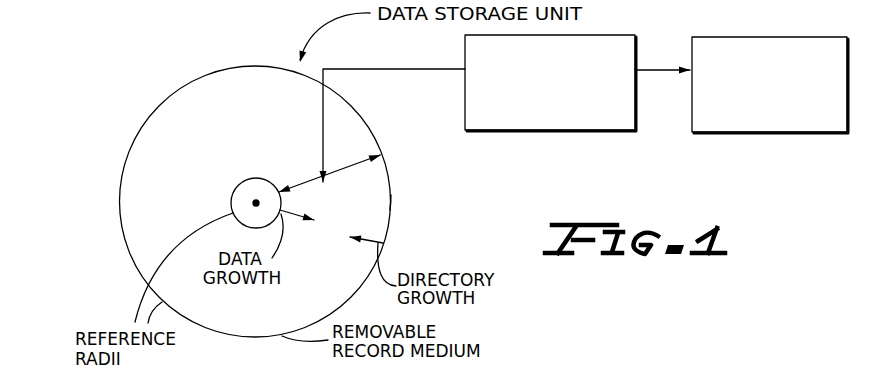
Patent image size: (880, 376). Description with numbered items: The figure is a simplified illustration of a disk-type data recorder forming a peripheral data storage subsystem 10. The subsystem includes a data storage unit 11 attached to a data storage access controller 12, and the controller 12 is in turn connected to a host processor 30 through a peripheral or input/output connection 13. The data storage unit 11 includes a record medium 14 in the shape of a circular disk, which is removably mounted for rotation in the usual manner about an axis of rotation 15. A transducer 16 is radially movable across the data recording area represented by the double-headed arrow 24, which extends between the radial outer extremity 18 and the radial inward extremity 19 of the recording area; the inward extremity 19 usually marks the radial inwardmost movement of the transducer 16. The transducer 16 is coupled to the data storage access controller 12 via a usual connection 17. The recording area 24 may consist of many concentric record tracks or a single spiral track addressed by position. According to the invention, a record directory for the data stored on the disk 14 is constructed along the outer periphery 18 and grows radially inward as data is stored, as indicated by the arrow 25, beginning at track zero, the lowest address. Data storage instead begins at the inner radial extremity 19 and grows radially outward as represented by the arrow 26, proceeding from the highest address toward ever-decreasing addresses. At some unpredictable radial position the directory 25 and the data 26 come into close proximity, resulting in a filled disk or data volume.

The peripheral data storage subsystem 10 is at (246, 168).
The data storage unit 11 is at (123, 152).
The data storage access controller 12 is at (625, 33).
The peripheral or input/output connection 13 is at (653, 72).
The record medium 14 is at (132, 262).
The axis of rotation 15 is at (254, 202).
The transducer 16 is at (320, 173).
The connection 17 is at (393, 72).
The radial outer extremity 18 is at (392, 203).
The radial inward extremity 19 is at (233, 208).
The data recording area 24 is at (381, 160).
The directory growth arrow 25 is at (368, 236).
The data growth arrow 26 is at (295, 216).
The host processor 30 is at (802, 37).